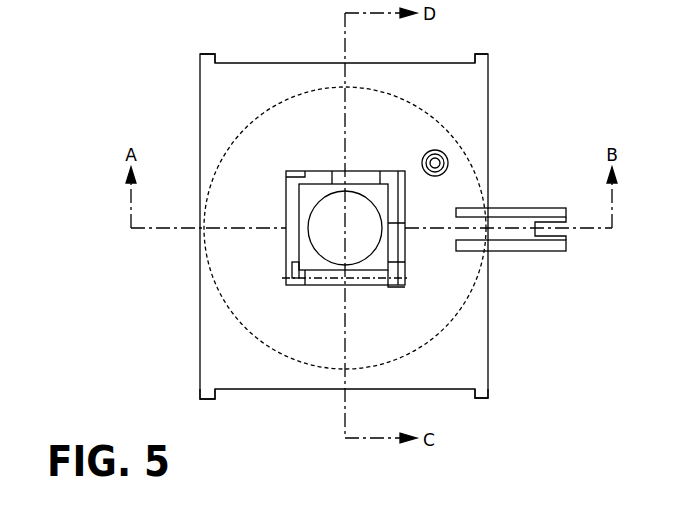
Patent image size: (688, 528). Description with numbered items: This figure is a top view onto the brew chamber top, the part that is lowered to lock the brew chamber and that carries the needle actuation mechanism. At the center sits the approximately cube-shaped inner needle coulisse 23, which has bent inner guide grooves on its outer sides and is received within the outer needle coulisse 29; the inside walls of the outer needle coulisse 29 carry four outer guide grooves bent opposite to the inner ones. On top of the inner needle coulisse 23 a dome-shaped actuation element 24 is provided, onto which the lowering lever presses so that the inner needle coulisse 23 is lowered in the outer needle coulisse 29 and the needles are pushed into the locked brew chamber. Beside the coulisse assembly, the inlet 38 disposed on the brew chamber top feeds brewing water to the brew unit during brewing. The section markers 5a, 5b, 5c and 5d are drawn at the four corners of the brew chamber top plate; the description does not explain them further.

The lower-left corner of mounting plate 5a is at (200, 391).
The lower-right corner of mounting plate 5b is at (488, 391).
The upper-left corner of mounting plate 5c is at (205, 62).
The upper-right corner of mounting plate 5d is at (482, 60).
The inner needle coulisse 23 is at (299, 243).
The dome-shaped actuation element 24 is at (360, 239).
The outer needle coulisse 29 is at (292, 257).
The inlet 38 is at (440, 157).